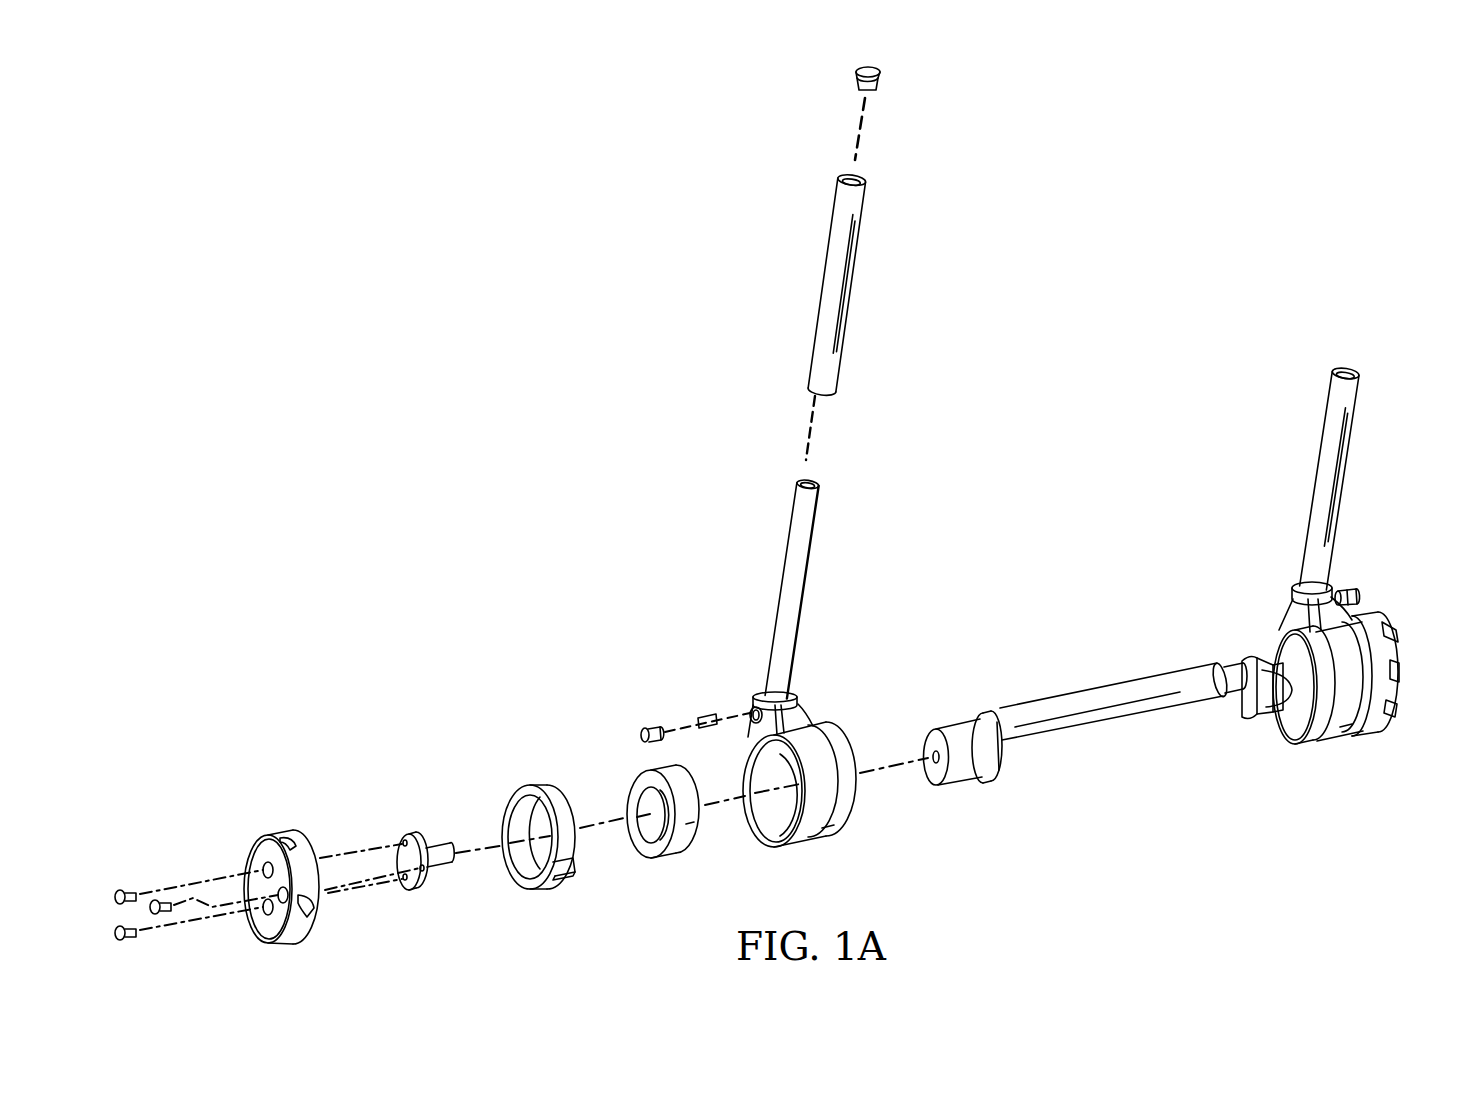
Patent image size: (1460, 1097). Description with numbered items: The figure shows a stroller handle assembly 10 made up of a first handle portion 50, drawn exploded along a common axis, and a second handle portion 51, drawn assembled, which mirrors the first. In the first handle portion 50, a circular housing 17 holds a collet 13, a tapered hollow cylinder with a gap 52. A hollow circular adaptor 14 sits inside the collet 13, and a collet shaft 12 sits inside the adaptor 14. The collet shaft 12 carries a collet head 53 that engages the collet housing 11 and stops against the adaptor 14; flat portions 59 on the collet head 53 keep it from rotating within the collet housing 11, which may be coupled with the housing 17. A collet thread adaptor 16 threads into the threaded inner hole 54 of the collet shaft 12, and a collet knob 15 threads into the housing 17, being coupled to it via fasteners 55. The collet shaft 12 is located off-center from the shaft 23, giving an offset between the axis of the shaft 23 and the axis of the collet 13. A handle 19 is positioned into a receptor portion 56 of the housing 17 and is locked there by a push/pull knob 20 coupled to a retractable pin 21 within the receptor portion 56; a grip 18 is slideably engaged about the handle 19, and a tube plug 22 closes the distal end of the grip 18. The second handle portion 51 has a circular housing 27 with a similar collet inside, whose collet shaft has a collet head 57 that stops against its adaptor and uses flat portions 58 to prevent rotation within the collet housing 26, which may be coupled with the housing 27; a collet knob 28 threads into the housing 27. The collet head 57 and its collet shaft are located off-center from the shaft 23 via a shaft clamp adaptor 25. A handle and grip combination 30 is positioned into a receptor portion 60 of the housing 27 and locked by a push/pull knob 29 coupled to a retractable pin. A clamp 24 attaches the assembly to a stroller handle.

The stroller handle assembly 10 is at (1150, 292).
The collet housing 11 is at (815, 692).
The collet shaft 12 is at (990, 738).
The collet 13 is at (557, 829).
The hollow circular adaptor 14 is at (680, 852).
The collet knob 15 is at (264, 833).
The collet thread adaptor 16 is at (408, 834).
The housing 17 is at (806, 848).
The grip 18 is at (822, 275).
The handle 19 is at (782, 580).
The push/pull knob 20 is at (648, 726).
The retractable pin 21 is at (705, 716).
The tube plug 22 is at (858, 70).
The shaft 23 is at (1103, 692).
The clamp 24 is at (1238, 710).
The shaft clamp adaptor 25 is at (1243, 702).
The collet housing 26 is at (1333, 588).
The housing 27 is at (1348, 738).
The collet knob 28 is at (1396, 722).
The push/pull knob 29 is at (1360, 597).
The handle and grip combination 30 is at (1318, 470).
The first handle portion 50 is at (818, 578).
The second handle portion 51 is at (1285, 573).
The gap 52 is at (570, 880).
The collet head 53 is at (988, 720).
The threaded inner hole 54 is at (925, 740).
The fasteners 55 is at (118, 890).
The receptor portion 56 is at (795, 712).
The collet head 57 is at (1300, 716).
The flat portions 58 is at (1290, 750).
The flat portions 59 is at (1003, 760).
The receptor portion 60 is at (1292, 600).